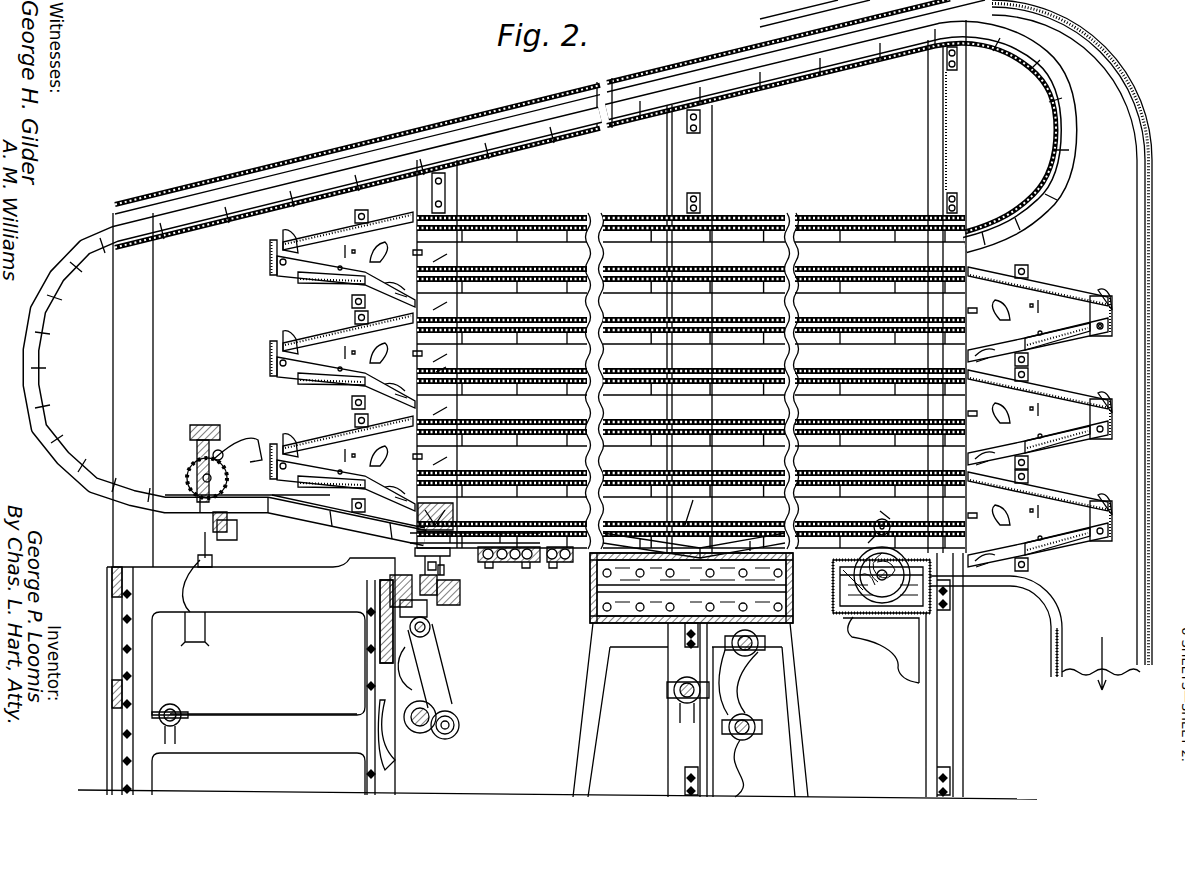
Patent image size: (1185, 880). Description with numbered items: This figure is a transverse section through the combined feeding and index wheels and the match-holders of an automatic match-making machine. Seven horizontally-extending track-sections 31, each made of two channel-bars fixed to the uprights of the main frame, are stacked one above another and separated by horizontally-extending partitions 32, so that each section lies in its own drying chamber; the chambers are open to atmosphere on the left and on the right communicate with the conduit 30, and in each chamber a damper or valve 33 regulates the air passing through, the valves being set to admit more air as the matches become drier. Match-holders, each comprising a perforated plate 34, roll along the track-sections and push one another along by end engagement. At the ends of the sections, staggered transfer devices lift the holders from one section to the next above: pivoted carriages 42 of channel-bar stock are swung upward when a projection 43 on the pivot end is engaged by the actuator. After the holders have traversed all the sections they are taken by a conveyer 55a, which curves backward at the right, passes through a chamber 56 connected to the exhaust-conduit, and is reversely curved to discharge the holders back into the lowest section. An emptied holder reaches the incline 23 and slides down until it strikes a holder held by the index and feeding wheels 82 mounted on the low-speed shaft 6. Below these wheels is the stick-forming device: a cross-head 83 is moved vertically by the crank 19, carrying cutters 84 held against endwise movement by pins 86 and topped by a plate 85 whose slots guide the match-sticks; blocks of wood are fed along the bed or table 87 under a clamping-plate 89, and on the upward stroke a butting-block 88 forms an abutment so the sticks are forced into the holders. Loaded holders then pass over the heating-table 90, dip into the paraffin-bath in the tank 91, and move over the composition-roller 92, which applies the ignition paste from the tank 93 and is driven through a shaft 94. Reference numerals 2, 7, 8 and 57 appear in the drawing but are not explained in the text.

The drive shaft 2 is at (428, 726).
The low-speed shaft 6 is at (348, 511).
The lower shaft bearing 7 is at (740, 724).
The upper shaft bearing 8 is at (748, 655).
The crank 19 is at (433, 670).
The incline 23 is at (330, 500).
The conduit 30 is at (1089, 654).
The track-sections 31 is at (550, 233).
The partitions 32 is at (830, 221).
The damper or valve 33 is at (447, 366).
The perforated plate 34 is at (873, 240).
The carriages 42 is at (1100, 328).
The projection 43 is at (1093, 298).
The conveyer 55a is at (120, 232).
The chamber 56 is at (340, 170).
The sprocket wheel 57 is at (208, 478).
The index and feeding wheels 82 is at (455, 505).
The cross-head 83 is at (395, 624).
The cutters 84 is at (428, 562).
The plate 85 is at (440, 563).
The pins 86 is at (372, 584).
The bed or table 87 is at (462, 594).
The butting-block 88 is at (460, 580).
The clamping-plate 89 is at (446, 573).
The heating-table 90 is at (522, 563).
The tank 91 is at (590, 596).
The composition-roller 92 is at (863, 600).
The tank 93 is at (902, 604).
The shaft 94 is at (893, 523).